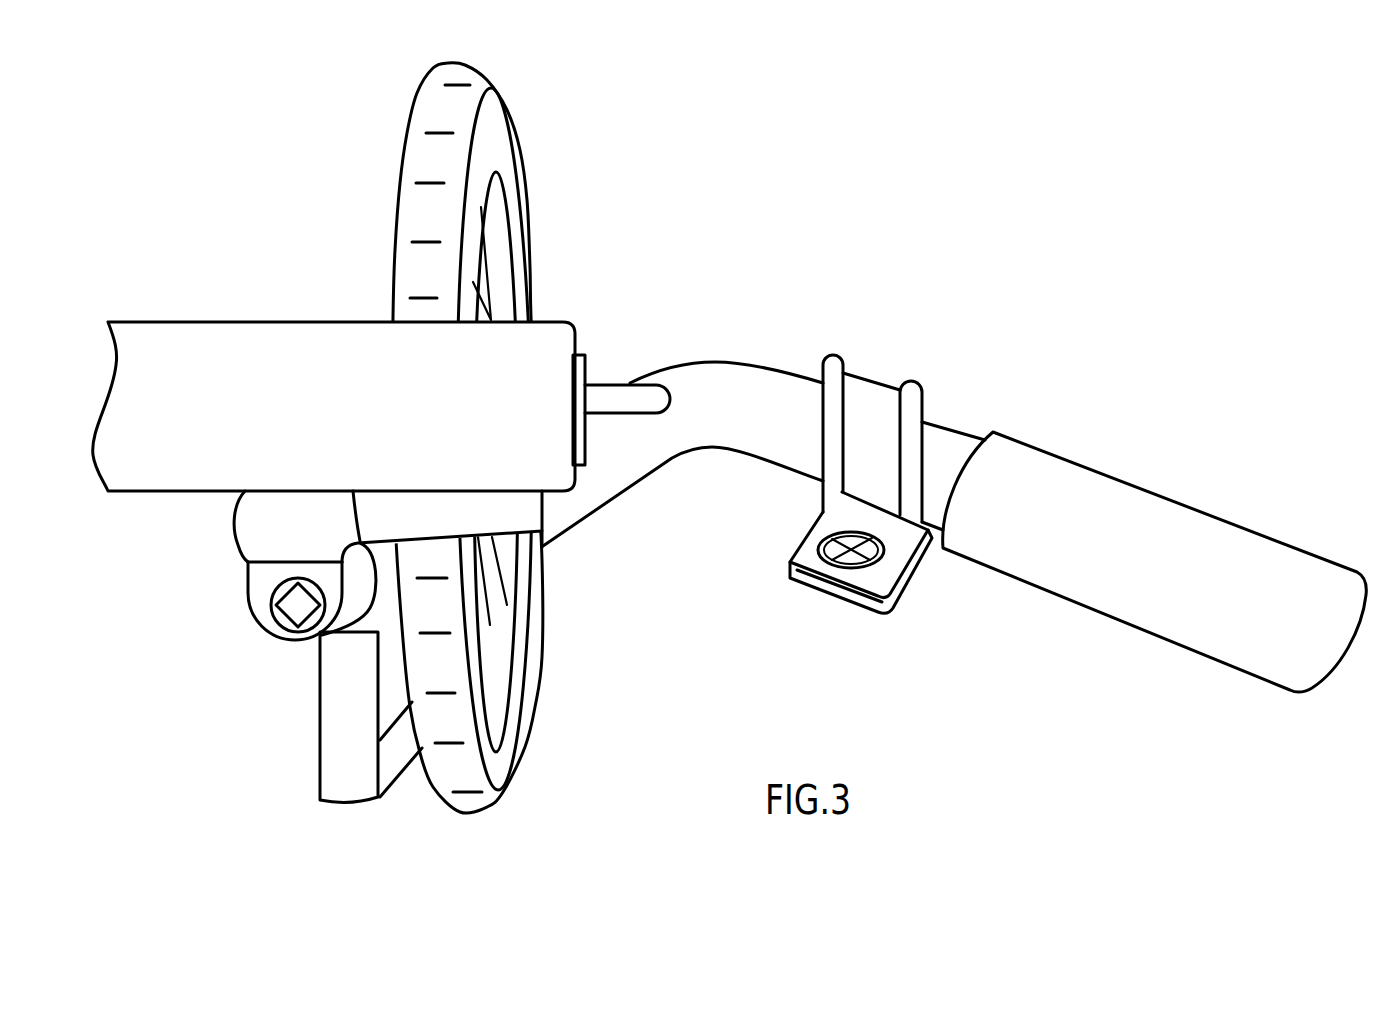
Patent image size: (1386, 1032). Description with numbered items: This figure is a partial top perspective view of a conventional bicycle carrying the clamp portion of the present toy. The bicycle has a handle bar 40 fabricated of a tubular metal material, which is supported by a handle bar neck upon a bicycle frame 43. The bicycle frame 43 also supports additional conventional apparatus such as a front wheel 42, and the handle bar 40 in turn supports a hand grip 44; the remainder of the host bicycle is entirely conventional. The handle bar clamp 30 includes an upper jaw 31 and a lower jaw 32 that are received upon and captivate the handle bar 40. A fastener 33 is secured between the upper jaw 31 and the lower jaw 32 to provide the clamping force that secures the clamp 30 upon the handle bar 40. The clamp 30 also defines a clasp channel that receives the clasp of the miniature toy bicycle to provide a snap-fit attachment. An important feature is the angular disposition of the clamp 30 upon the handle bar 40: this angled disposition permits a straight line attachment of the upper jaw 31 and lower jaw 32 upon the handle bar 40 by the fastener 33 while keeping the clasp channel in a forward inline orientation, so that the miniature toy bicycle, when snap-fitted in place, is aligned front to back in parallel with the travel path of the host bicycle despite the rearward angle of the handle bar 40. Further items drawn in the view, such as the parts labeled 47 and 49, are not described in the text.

The handle bar clamp 30 is at (913, 484).
The upper jaw 31 is at (912, 450).
The lower jaw 32 is at (877, 590).
The fastener 33 is at (852, 556).
The handle bar 40 is at (755, 365).
The front wheel 42 is at (530, 213).
The bicycle frame 43 is at (350, 778).
The hand grip 44 is at (1140, 512).
The fork head 47 is at (328, 645).
The clamp band 49 is at (873, 381).